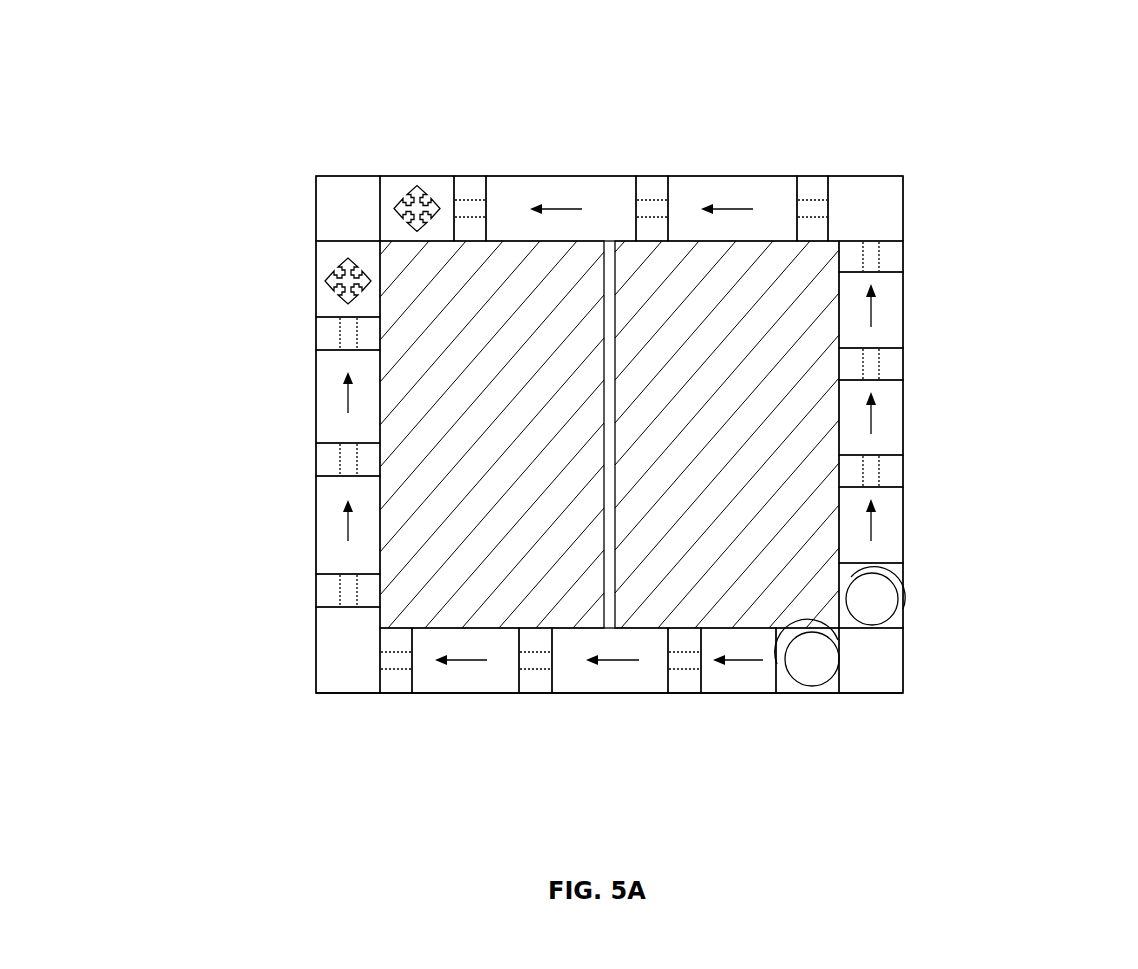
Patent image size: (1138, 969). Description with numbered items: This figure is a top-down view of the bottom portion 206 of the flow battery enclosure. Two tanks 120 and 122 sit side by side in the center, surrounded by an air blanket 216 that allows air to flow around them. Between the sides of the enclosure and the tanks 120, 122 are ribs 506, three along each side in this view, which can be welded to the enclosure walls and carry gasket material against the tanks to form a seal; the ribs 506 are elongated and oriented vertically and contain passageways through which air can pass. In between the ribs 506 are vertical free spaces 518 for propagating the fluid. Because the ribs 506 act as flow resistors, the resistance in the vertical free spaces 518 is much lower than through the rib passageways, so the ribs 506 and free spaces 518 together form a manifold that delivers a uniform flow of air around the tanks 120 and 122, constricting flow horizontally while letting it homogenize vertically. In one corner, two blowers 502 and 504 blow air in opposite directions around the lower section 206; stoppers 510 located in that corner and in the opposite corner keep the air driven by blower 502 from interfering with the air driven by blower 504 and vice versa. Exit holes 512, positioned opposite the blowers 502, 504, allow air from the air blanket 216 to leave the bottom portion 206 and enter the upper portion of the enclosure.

The bottom portion 206 is at (945, 153).
The air blanket 216 is at (765, 700).
The tank 120 is at (515, 452).
The tank 122 is at (739, 452).
The blower 502 is at (880, 603).
The blower 504 is at (807, 658).
The rib 506 is at (469, 187).
The stopper 510 is at (347, 187).
The exit hole 512 is at (417, 210).
The vertical free space 518 is at (562, 187).